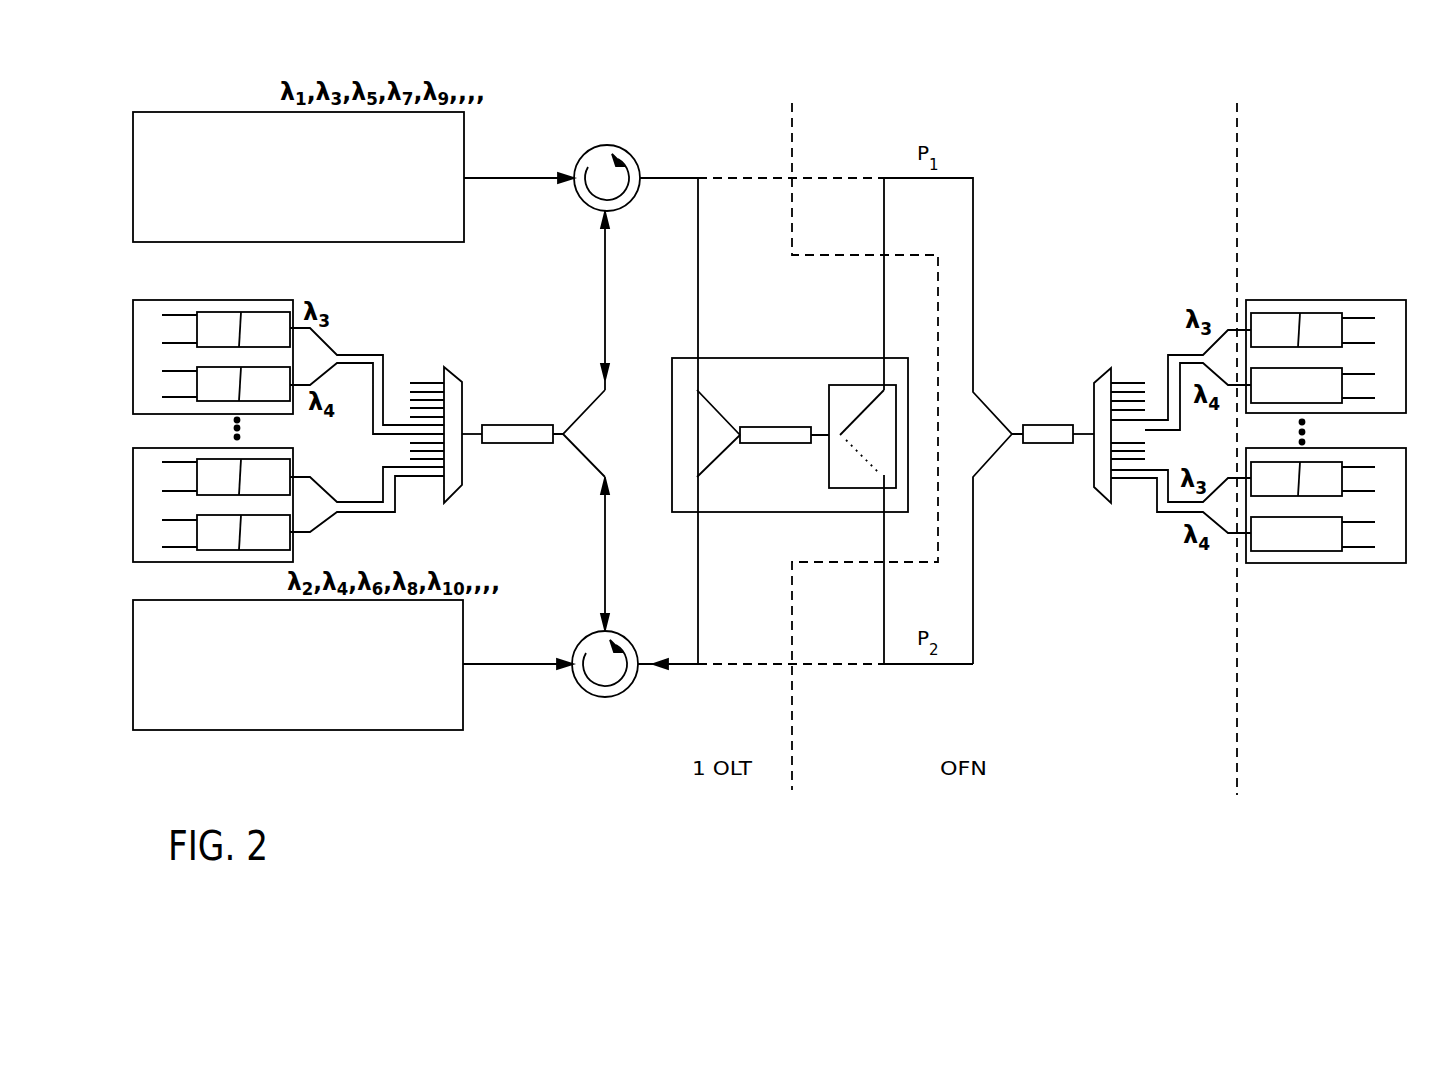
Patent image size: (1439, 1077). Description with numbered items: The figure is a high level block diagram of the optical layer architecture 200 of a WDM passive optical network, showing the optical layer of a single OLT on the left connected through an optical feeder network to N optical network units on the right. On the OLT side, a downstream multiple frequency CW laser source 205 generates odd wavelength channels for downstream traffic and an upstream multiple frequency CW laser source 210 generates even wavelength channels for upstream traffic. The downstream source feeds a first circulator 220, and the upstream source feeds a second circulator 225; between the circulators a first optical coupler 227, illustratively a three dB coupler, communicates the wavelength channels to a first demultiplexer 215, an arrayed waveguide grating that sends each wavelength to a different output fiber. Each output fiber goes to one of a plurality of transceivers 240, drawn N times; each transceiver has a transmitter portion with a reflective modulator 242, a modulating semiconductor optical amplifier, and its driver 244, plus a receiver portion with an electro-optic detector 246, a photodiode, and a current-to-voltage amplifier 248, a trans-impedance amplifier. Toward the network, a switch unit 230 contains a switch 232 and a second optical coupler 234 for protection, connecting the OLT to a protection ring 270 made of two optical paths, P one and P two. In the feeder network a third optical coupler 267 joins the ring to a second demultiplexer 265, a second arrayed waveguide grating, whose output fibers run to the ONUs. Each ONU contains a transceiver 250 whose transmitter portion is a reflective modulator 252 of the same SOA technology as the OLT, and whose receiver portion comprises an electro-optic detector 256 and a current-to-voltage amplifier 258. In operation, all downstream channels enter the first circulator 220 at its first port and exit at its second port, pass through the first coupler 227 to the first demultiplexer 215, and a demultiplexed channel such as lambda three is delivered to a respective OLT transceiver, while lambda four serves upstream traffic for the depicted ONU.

The optical layer architecture 200 is at (1283, 832).
The downstream multiple frequency CW laser source 205 is at (207, 112).
The upstream multiple frequency CW laser source 210 is at (227, 730).
The first demultiplexer 215 is at (452, 370).
The first circulator 220 is at (578, 157).
The second circulator 225 is at (570, 683).
The first optical coupler 227 is at (533, 445).
The switch unit 230 is at (733, 358).
The switch 232 is at (884, 390).
The second optical coupler 234 is at (760, 426).
The transceivers 240 is at (133, 307).
The reflective modulator 242 is at (223, 313).
The driver 244 is at (275, 313).
The electro-optic detector 246 is at (208, 402).
The current-to-voltage amplifier 248 is at (267, 402).
The transceiver 250 is at (1407, 315).
The reflective modulator 252 is at (1330, 403).
The electro-optic detector 256 is at (1275, 312).
The current-to-voltage amplifier 258 is at (1320, 312).
The second demultiplexer 265 is at (1097, 500).
The third optical coupler 267 is at (1042, 425).
The protection ring 270 is at (960, 705).